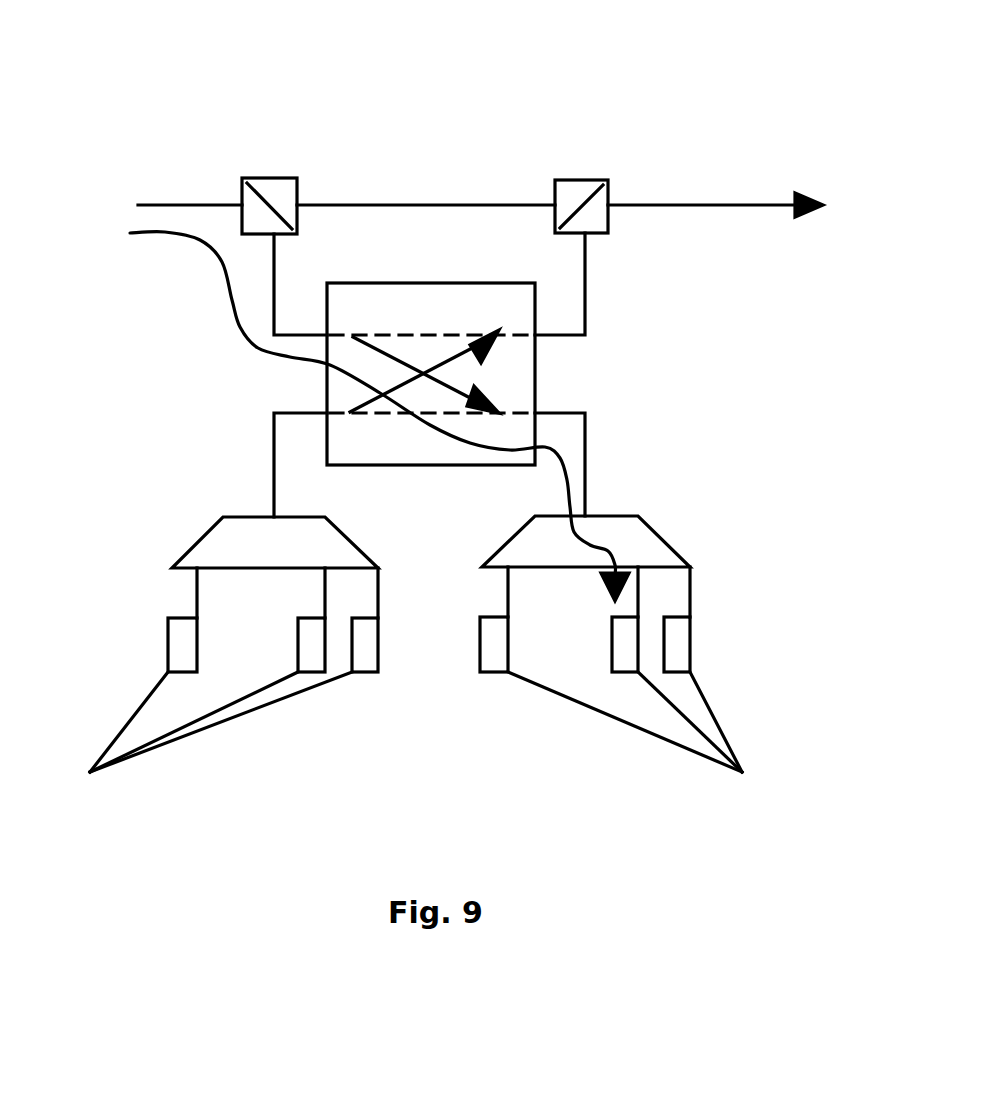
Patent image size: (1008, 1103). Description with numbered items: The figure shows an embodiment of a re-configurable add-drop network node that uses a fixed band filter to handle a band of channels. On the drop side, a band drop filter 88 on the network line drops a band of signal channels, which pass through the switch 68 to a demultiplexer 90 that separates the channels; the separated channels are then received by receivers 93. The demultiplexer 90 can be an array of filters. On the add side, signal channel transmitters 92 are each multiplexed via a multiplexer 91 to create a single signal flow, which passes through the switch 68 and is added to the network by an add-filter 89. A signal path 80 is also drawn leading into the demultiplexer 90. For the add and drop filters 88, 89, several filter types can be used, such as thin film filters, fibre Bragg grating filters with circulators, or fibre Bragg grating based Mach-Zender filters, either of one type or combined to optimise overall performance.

The band drop filter 88 is at (275, 179).
The add-filter 89 is at (585, 177).
The switch 68 is at (537, 368).
The multiplexer 91 is at (222, 515).
The demultiplexer 90 is at (667, 540).
The optical signal path 80 is at (617, 593).
The signal channel transmitters 92 is at (208, 713).
The receivers 93 is at (650, 713).